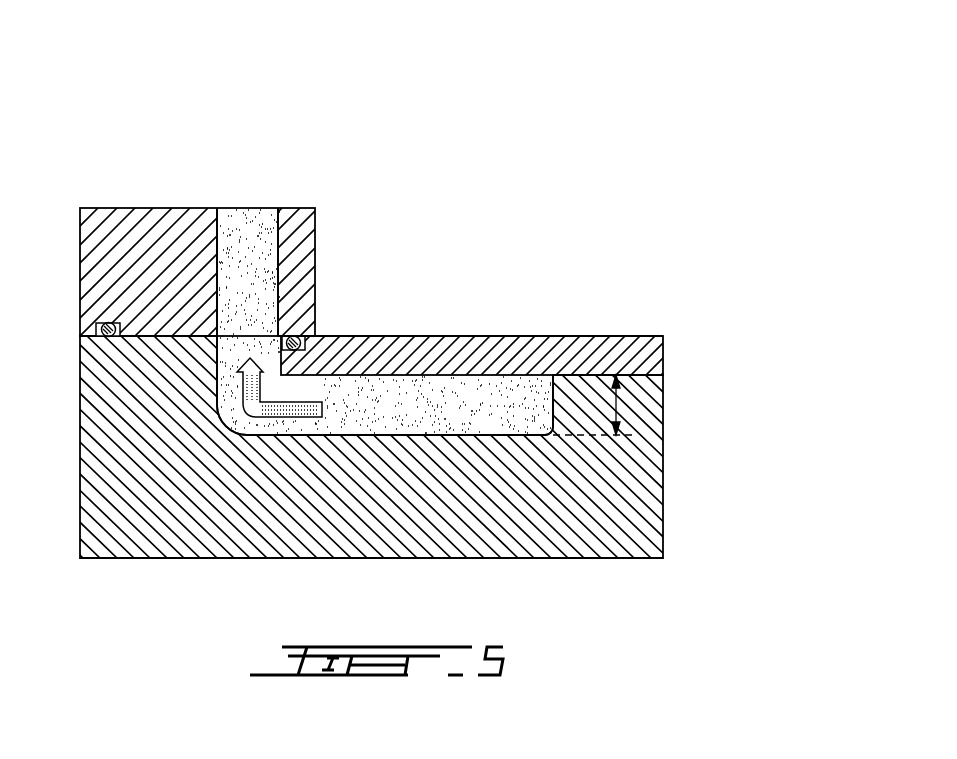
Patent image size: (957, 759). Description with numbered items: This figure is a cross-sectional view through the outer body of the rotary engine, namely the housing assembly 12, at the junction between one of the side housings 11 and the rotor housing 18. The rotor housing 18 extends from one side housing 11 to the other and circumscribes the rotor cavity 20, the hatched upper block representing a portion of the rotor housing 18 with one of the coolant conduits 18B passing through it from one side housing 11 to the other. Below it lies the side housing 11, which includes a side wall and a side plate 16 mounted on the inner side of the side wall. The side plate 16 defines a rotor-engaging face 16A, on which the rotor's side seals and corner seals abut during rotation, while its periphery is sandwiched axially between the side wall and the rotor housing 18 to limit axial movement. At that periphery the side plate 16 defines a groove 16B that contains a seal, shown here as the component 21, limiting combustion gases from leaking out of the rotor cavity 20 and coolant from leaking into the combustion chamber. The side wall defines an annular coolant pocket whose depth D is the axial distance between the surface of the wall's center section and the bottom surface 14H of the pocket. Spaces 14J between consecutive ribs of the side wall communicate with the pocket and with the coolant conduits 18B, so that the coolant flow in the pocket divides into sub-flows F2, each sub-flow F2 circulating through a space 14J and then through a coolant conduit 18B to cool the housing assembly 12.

The housing assembly 12 is at (513, 208).
The side housings 11 is at (715, 335).
The rotor housing 18 is at (134, 208).
The coolant conduits 18B is at (278, 245).
The side plate 16 is at (608, 357).
The rotor-engaging face 16A is at (380, 336).
The groove 16B is at (361, 299).
The seal 21 is at (295, 336).
The rotor cavity 20 is at (500, 266).
The spaces 14J is at (217, 360).
The bottom surface of the pocket 14H is at (412, 437).
The sub-flow F2 is at (248, 418).
The depth D is at (616, 405).